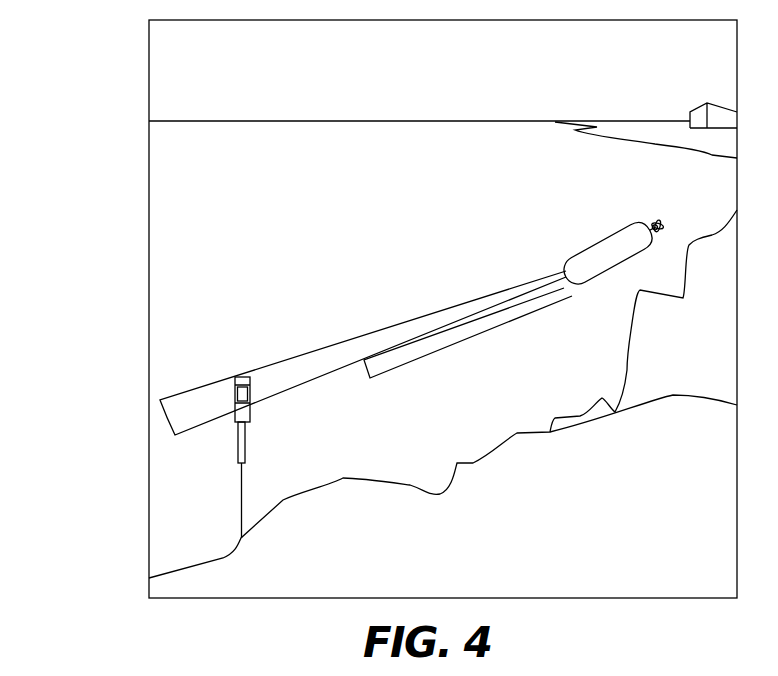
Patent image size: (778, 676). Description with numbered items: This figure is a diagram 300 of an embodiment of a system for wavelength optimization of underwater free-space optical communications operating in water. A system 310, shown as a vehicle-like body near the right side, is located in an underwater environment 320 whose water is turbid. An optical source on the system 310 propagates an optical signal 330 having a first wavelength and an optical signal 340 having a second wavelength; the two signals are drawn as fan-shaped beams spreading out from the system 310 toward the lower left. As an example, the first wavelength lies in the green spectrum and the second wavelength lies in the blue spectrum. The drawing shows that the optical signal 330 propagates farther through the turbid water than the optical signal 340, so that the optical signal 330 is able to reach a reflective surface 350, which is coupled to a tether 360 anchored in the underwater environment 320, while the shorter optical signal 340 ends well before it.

The diagram 300 is at (106, 72).
The system 310 is at (590, 263).
The underwater environment 320 is at (182, 188).
The optical signal 330 is at (363, 350).
The optical signal 340 is at (436, 343).
The reflective surface 350 is at (235, 403).
The tether 360 is at (241, 497).